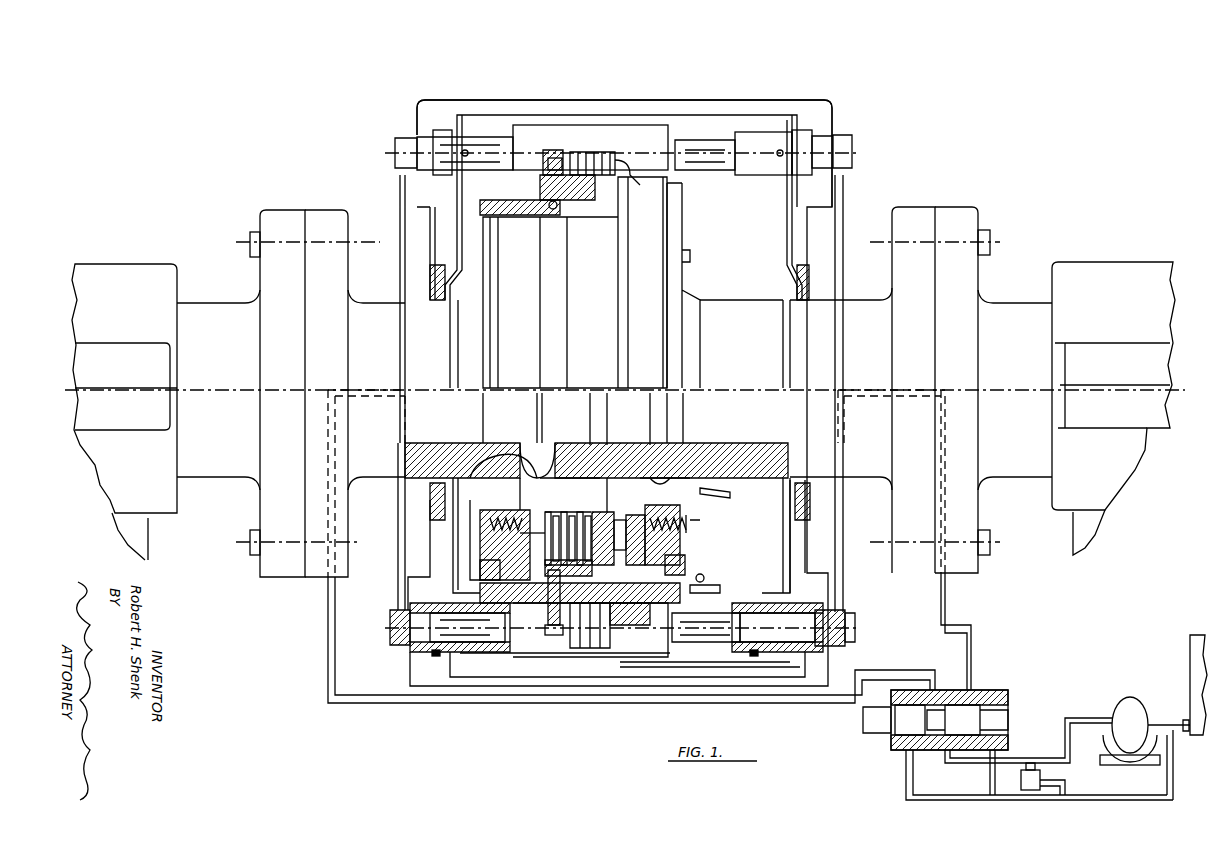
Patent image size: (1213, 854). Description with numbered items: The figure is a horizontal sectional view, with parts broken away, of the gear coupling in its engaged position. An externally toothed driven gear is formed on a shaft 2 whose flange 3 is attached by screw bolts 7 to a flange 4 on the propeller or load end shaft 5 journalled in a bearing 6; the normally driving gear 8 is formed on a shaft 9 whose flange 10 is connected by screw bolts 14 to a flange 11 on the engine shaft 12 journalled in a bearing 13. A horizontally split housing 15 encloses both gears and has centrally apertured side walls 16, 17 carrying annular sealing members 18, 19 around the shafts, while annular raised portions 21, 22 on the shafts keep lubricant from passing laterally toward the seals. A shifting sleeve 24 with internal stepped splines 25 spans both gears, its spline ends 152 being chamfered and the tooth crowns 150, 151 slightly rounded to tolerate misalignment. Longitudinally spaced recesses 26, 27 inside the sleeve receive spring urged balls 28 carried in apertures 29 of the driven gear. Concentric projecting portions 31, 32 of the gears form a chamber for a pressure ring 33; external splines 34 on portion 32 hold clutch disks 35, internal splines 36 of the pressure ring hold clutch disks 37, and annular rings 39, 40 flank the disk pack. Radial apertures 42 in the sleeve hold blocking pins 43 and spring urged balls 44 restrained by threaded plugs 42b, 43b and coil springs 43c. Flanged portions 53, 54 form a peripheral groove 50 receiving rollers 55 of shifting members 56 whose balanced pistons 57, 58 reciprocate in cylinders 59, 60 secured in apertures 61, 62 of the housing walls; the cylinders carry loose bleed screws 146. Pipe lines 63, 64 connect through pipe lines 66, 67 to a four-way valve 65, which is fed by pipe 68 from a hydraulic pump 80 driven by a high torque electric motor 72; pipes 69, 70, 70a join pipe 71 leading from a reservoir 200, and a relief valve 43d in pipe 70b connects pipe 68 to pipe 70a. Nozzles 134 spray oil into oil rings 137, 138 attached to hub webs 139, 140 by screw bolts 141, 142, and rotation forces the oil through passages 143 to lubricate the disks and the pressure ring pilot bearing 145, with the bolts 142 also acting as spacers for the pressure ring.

The shaft 2 is at (868, 300).
The flange 3 is at (910, 207).
The flange 4 is at (960, 207).
The propeller or load end shaft 5 is at (1022, 303).
The bearing 6 is at (1105, 262).
The screw bolts 7 is at (990, 243).
The driving gear 8 is at (495, 540).
The shaft 9 is at (378, 303).
The flange 10 is at (325, 212).
The flange 11 is at (279, 212).
The engine shaft 12 is at (214, 303).
The bearing 13 is at (163, 262).
The screw bolts 14 is at (250, 238).
The housing 15 is at (772, 100).
The side wall 16 is at (787, 231).
The side wall 17 is at (455, 232).
The sealing member 18 is at (797, 287).
The sealing member 19 is at (447, 297).
The annular raised portion 21 is at (790, 357).
The annular raised portion 22 is at (452, 339).
The shifting sleeve 24 is at (685, 241).
The splines 25 is at (640, 585).
The recesses 26 is at (720, 589).
The recesses 27 is at (630, 626).
The spring urged balls 28 is at (698, 535).
The apertures 29 is at (686, 524).
The projecting portion 31 is at (648, 505).
The projecting portion 32 is at (571, 512).
The pressure ring 33 is at (636, 540).
The splines 34 is at (548, 512).
The clutch disks 35 is at (578, 512).
The splines 36 is at (628, 537).
The clutch disks 37 is at (547, 566).
The annular ring 39 is at (520, 533).
The annular ring 40 is at (600, 512).
The apertures 42 is at (582, 186).
The threaded plug 42b is at (560, 158).
The blocking pins 43 is at (548, 620).
The threaded plug 43b is at (555, 635).
The coil springs 43c is at (558, 205).
The relief valve 43d is at (1030, 770).
The spring urged balls 44 is at (560, 210).
The peripheral groove 50 is at (615, 291).
The flanged portion 53 is at (548, 152).
The flanged portion 54 is at (618, 158).
The rollers 55 is at (600, 630).
The shifting members 56 is at (608, 125).
The piston 57 is at (511, 135).
The piston 58 is at (705, 170).
The cylinder 59 is at (466, 135).
The cylinder 60 is at (750, 132).
The aperture 61 is at (445, 128).
The aperture 62 is at (800, 130).
The pipe lines 63 is at (398, 508).
The pipe lines 64 is at (843, 229).
The four-way valve 65 is at (1005, 691).
The pipe line 66 is at (328, 650).
The pipe line 67 is at (947, 603).
The pipe 68 is at (1085, 723).
The pipe 69 is at (906, 780).
The pipe 70 is at (990, 781).
The pipe 70a is at (1147, 800).
The pipe 70b is at (1065, 790).
The pipe 71 is at (1175, 723).
The electric motor 72 is at (1112, 761).
The hydraulic pump 80 is at (1140, 716).
The nozzles 134 is at (458, 443).
The oil ring 137 is at (496, 444).
The oil ring 138 is at (690, 394).
The hub web 139 is at (520, 455).
The hub web 140 is at (663, 470).
The screw bolts 141 is at (490, 521).
The bolts 142 is at (700, 494).
The passages 143 is at (545, 455).
The pressure ring pilot bearing 145 is at (612, 470).
The bleed screws 146 is at (437, 657).
The crowns 150 is at (704, 570).
The crowns 151 is at (485, 577).
The ends 152 is at (470, 578).
The reservoir 200 is at (1190, 650).